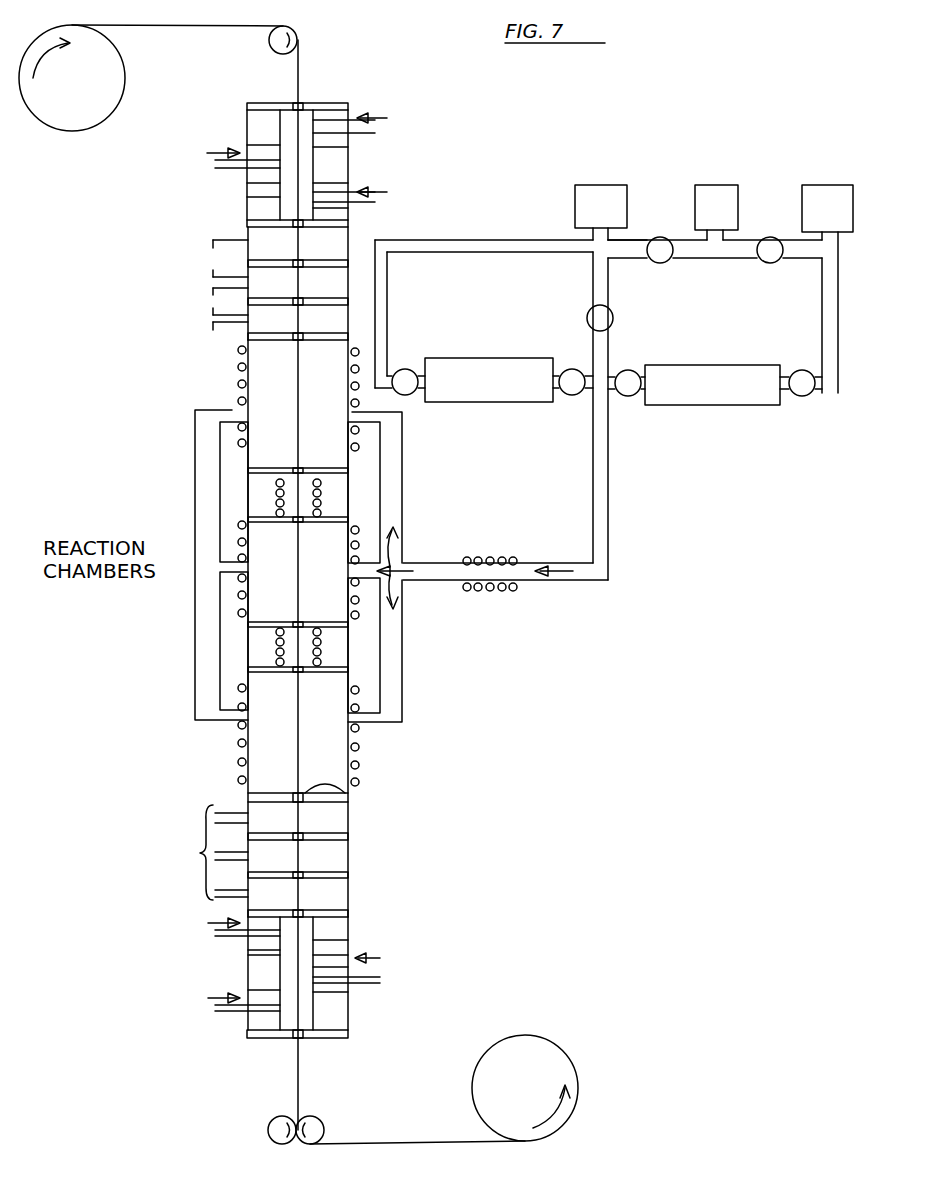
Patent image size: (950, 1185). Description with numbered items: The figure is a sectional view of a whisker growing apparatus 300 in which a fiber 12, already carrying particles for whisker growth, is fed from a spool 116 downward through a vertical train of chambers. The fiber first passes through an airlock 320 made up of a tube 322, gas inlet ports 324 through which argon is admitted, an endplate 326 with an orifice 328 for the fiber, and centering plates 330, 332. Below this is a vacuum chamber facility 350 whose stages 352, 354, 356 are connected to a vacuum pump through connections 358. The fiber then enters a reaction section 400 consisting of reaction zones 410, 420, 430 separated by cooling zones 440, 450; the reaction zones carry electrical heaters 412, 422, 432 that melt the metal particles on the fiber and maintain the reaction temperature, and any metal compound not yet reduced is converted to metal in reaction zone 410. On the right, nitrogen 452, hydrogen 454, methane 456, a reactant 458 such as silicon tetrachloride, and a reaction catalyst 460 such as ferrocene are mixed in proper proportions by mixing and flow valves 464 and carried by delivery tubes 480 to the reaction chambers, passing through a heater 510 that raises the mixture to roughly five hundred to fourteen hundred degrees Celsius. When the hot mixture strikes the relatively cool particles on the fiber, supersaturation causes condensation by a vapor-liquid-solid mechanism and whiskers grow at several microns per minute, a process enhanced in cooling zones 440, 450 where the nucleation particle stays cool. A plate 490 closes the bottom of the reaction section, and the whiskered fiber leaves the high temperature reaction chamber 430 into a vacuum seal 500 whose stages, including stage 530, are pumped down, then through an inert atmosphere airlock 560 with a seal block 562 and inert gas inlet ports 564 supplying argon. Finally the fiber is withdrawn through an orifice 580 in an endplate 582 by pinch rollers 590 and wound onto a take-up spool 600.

The fiber 12 is at (185, 22).
The spool 116 is at (85, 122).
The whisker growing apparatus 300 is at (84, 486).
The airlock 320 is at (418, 176).
The tube 322 is at (335, 155).
The gas inlet ports 324 is at (213, 170).
The endplate 326 is at (325, 103).
The orifice 328 is at (300, 103).
The centering plate 330 is at (263, 145).
The centering plate 332 is at (263, 197).
The vacuum chamber facility 350 is at (48, 300).
The stage 352 is at (340, 243).
The stage 354 is at (248, 312).
The stage 356 is at (262, 340).
The connections 358 is at (213, 240).
The reaction section 400 is at (508, 634).
The reaction zone 410 is at (263, 385).
The electrical heater 412 is at (94, 411).
The reaction zone 420 is at (333, 545).
The electrical heater 422 is at (238, 540).
The reaction zone 430 is at (350, 752).
The electrical heater 432 is at (240, 745).
The cooling zone 440 is at (333, 492).
The cooling zone 450 is at (333, 648).
The nitrogen 452 is at (600, 185).
The hydrogen 454 is at (703, 185).
The methane 456 is at (818, 185).
The reactant 458 is at (495, 402).
The reaction catalyst 460 is at (720, 405).
The mixing and flow valves 464 is at (660, 264).
The delivery tubes 480 is at (195, 414).
The bottom plate of reaction section 490 is at (355, 793).
The vacuum seal 500 is at (420, 869).
The heater 510 is at (335, 822).
The vacuum stage 530 is at (342, 857).
The inert atmosphere airlock 560 is at (556, 984).
The seal block 562 is at (340, 945).
The inert gas inlet ports 564 is at (213, 936).
The orifice 580 is at (313, 1038).
The endplate 582 is at (262, 1040).
The pinch rollers 590 is at (277, 1118).
The spool 600 is at (562, 1068).